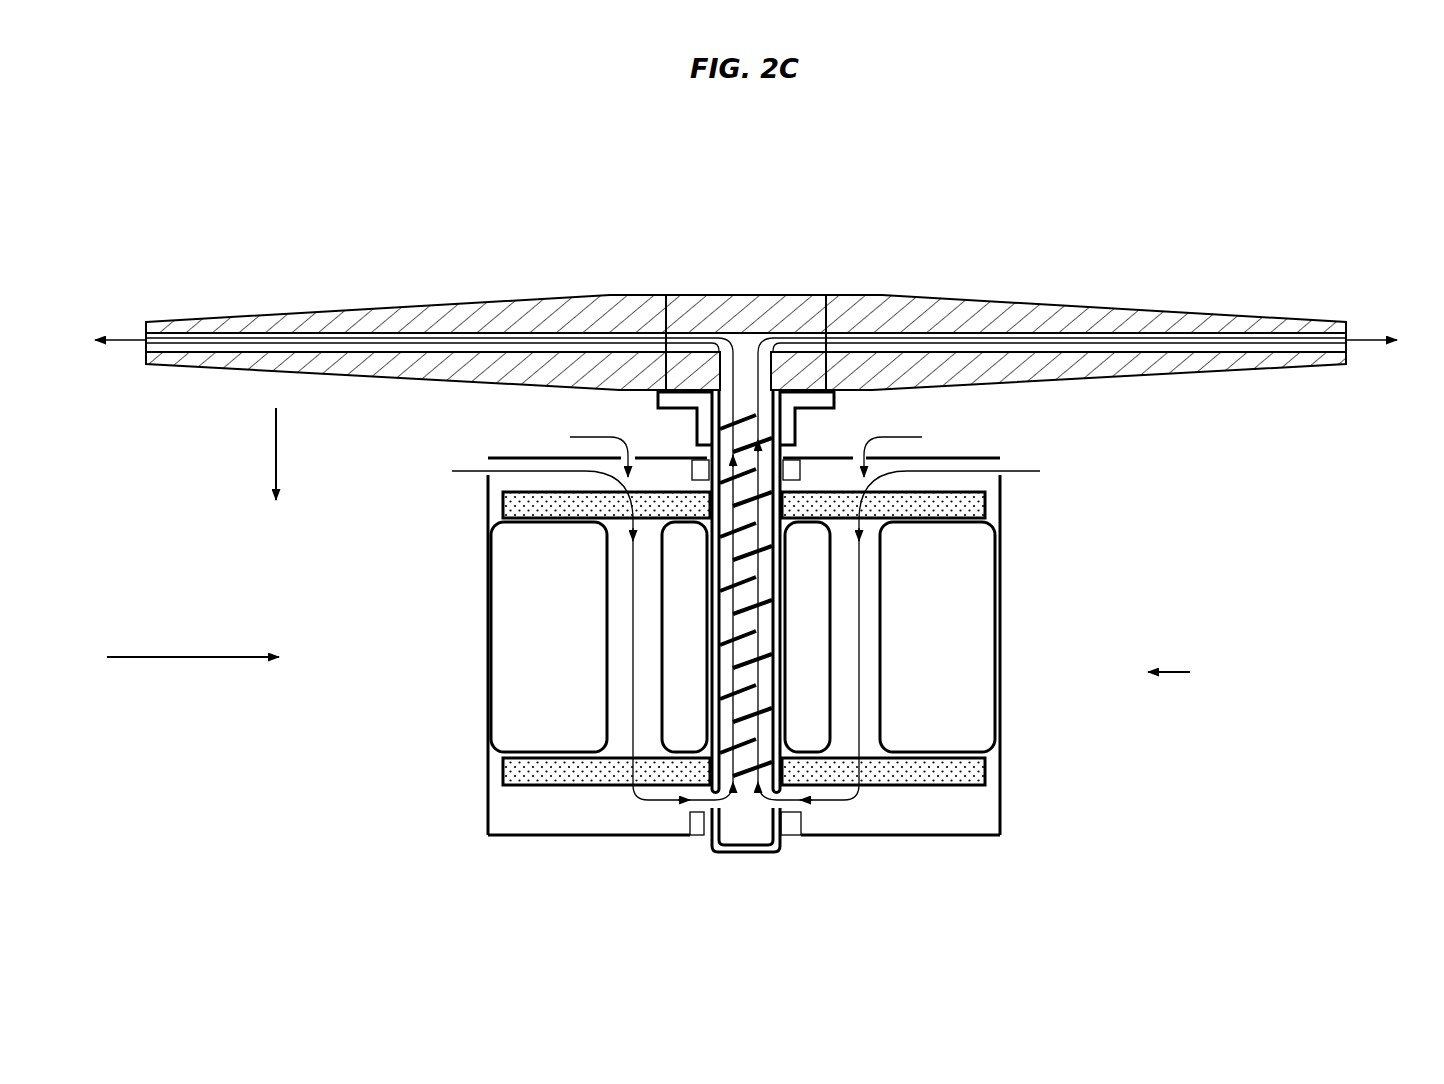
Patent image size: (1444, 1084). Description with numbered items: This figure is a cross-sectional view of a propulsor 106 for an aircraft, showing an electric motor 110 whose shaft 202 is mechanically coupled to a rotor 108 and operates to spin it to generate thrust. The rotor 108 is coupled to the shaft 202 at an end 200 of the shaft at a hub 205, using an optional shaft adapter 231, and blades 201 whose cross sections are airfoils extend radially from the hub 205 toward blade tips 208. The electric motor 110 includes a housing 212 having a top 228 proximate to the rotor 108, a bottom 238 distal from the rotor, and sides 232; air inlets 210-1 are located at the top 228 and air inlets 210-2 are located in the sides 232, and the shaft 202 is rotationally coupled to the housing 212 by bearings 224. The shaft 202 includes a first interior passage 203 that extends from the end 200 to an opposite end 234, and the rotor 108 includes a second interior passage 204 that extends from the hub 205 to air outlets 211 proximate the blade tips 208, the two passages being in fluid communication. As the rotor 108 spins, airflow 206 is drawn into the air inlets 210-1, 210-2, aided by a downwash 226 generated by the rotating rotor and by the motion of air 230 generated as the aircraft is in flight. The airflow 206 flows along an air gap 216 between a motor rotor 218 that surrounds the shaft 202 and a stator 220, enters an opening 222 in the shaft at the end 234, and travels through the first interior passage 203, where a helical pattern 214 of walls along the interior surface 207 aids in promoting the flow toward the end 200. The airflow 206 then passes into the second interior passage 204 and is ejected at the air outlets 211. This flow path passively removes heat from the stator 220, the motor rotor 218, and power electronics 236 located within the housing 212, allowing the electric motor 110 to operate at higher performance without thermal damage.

The propulsor 106 is at (636, 188).
The rotor 108 is at (896, 266).
The electric motor 110 is at (1185, 675).
The end of shaft 200 is at (745, 374).
The blades 201 is at (447, 318).
The shaft 202 is at (703, 848).
The first interior passage 203 is at (753, 812).
The second interior passage 204 is at (928, 330).
The hub 205 is at (824, 312).
The airflow 206 is at (121, 348).
The interior surface 207 is at (741, 790).
The blade tips 208 is at (153, 390).
The air inlets 210-1 is at (637, 450).
The air inlets 210-2 is at (468, 478).
The air outlets 211 is at (135, 328).
The housing 212 is at (487, 808).
The helical pattern 214 is at (692, 470).
The air gap 216 is at (611, 590).
The motor rotor 218 is at (706, 697).
The stator 220 is at (566, 697).
The opening 222 is at (681, 804).
The bearings 224 is at (800, 470).
The downwash 226 is at (276, 430).
The top 228 is at (518, 456).
The motion of air 230 is at (190, 658).
The shaft adapter 231 is at (688, 397).
The sides 232 is at (481, 697).
The end of shaft 234 is at (737, 898).
The power electronics 236 is at (505, 507).
The bottom 238 is at (935, 845).